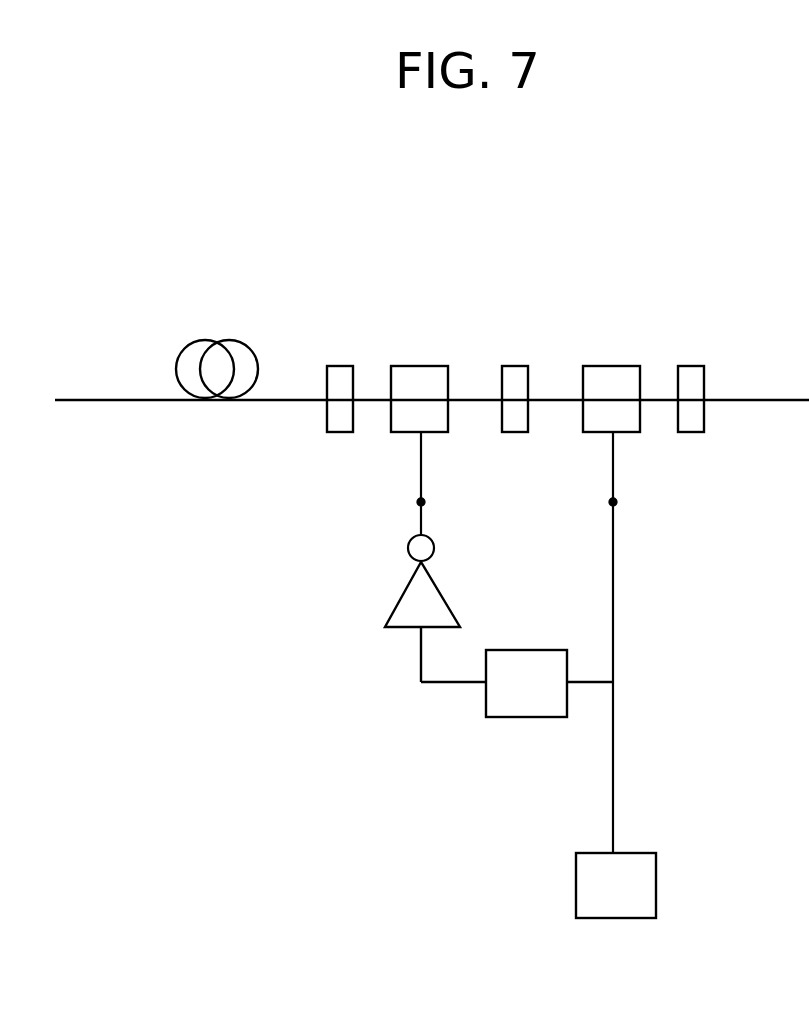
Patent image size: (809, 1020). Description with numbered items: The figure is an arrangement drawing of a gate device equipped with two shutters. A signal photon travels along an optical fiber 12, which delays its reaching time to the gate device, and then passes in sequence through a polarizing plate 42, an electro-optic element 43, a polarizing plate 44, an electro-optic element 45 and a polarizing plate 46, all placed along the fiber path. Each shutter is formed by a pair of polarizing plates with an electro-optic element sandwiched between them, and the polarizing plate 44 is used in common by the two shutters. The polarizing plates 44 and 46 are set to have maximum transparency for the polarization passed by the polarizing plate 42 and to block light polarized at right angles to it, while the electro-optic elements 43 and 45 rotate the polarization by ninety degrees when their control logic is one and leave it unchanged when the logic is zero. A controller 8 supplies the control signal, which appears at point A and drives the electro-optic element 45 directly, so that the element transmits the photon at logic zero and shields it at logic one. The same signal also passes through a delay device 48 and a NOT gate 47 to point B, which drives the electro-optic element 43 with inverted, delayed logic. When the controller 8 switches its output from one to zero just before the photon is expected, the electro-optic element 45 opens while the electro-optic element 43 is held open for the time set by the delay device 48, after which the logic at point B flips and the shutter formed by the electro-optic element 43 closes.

The optical fiber 12 is at (117, 400).
The polarizing plate 42 is at (341, 378).
The electro-optic element 43 is at (420, 380).
The polarizing plate 44 is at (515, 378).
The electro-optic element 45 is at (610, 378).
The polarizing plate 46 is at (690, 377).
The NOT gate 47 is at (421, 600).
The delay device 48 is at (527, 700).
The controller 8 is at (638, 888).
The point A is at (613, 502).
The point B is at (421, 502).